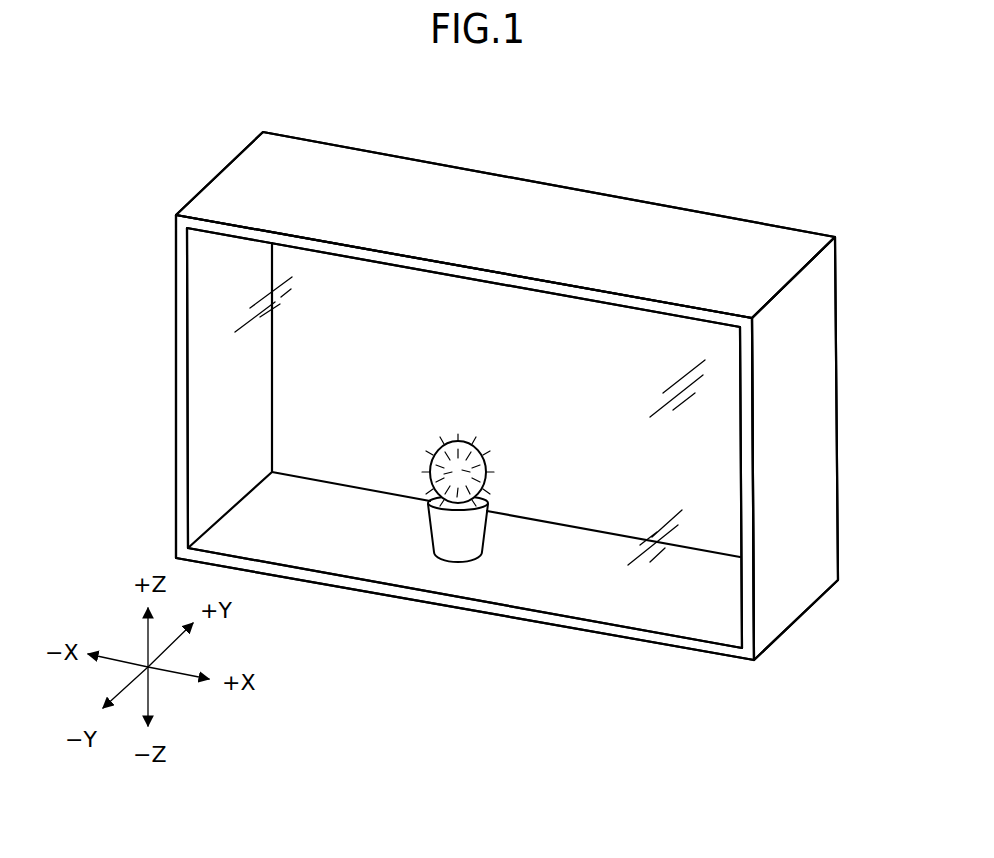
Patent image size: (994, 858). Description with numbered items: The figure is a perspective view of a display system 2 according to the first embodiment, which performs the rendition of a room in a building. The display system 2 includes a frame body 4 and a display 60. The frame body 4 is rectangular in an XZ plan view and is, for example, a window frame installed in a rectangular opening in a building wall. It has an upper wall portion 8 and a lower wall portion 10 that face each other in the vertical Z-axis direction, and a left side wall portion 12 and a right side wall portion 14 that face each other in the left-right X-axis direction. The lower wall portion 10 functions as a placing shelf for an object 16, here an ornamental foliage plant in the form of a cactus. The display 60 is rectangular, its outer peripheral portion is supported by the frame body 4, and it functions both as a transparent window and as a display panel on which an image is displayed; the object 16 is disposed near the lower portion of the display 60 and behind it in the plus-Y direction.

The display system 2 is at (818, 186).
The frame body 4 is at (190, 193).
The upper wall portion 8 is at (540, 191).
The lower wall portion 10 is at (367, 553).
The left side wall portion 12 is at (176, 313).
The right side wall portion 14 is at (805, 417).
The object 16 is at (452, 560).
The display 60 is at (210, 408).